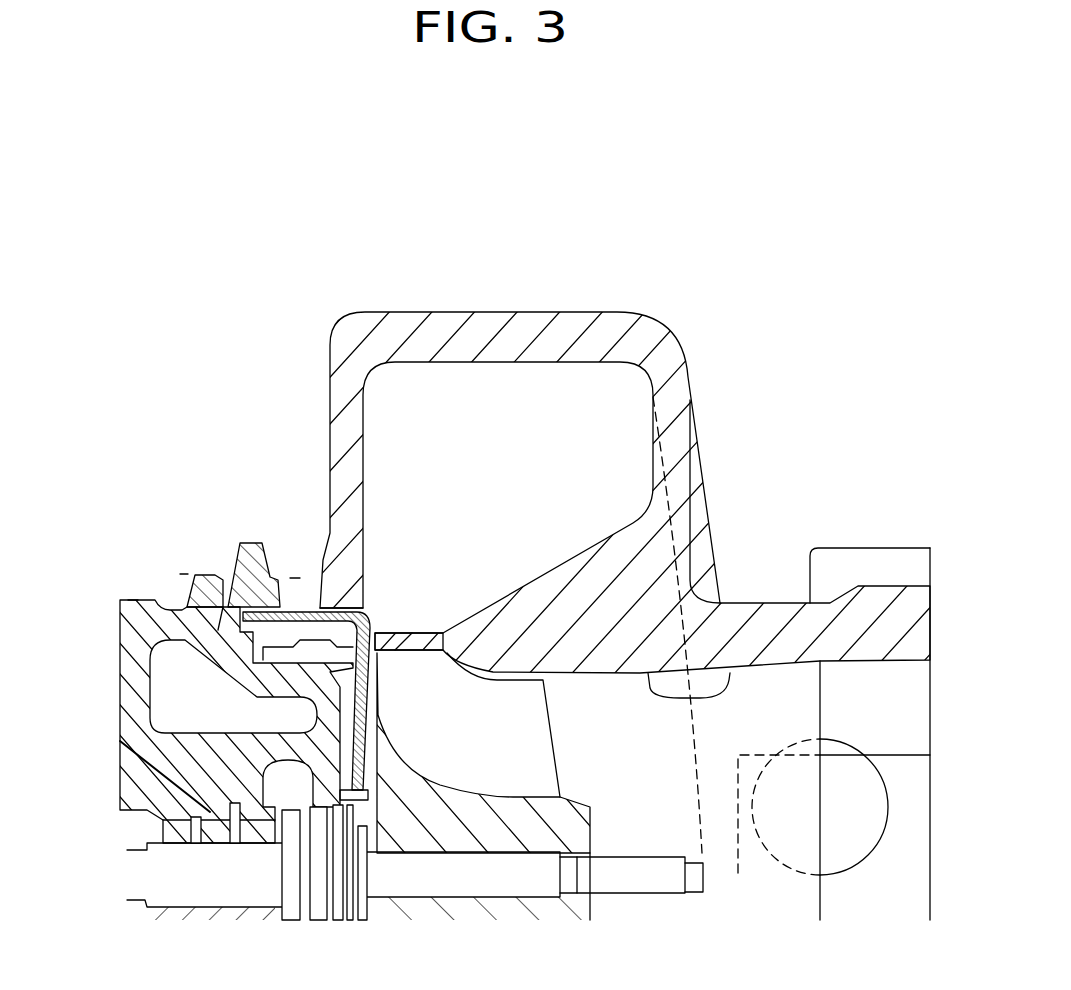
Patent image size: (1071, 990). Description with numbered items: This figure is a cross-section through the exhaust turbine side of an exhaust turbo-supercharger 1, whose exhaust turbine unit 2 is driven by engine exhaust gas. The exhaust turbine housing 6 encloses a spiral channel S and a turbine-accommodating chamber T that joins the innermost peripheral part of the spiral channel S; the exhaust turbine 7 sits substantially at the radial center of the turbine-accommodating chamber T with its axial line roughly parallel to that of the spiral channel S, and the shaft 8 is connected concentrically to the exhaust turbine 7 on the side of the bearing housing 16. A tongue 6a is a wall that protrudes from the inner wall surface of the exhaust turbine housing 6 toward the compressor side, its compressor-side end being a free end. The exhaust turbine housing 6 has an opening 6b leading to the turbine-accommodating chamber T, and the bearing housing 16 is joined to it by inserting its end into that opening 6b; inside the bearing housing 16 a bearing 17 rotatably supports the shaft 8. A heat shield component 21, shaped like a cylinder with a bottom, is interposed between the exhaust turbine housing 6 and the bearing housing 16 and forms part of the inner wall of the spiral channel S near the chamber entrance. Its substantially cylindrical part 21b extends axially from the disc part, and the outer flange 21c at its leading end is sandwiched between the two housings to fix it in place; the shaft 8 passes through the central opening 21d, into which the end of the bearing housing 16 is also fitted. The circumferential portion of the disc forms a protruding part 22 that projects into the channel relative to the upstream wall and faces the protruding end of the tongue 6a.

The exhaust turbo-supercharger 1 is at (783, 265).
The exhaust turbine unit 2 is at (647, 292).
The exhaust turbine housing 6 is at (587, 310).
The tongue 6a is at (410, 633).
The opening 6b is at (243, 615).
The exhaust turbine 7 is at (570, 820).
The shaft 8 is at (220, 892).
The bearing housing 16 is at (138, 598).
The bearing 17 is at (173, 832).
The heat shield component 21 is at (313, 610).
The substantially cylindrical part 21b is at (290, 609).
The outer flange 21c is at (222, 598).
The opening 21d is at (352, 800).
The protruding part 22 is at (383, 612).
The spiral channel S is at (470, 357).
The turbine-accommodating chamber T is at (735, 672).